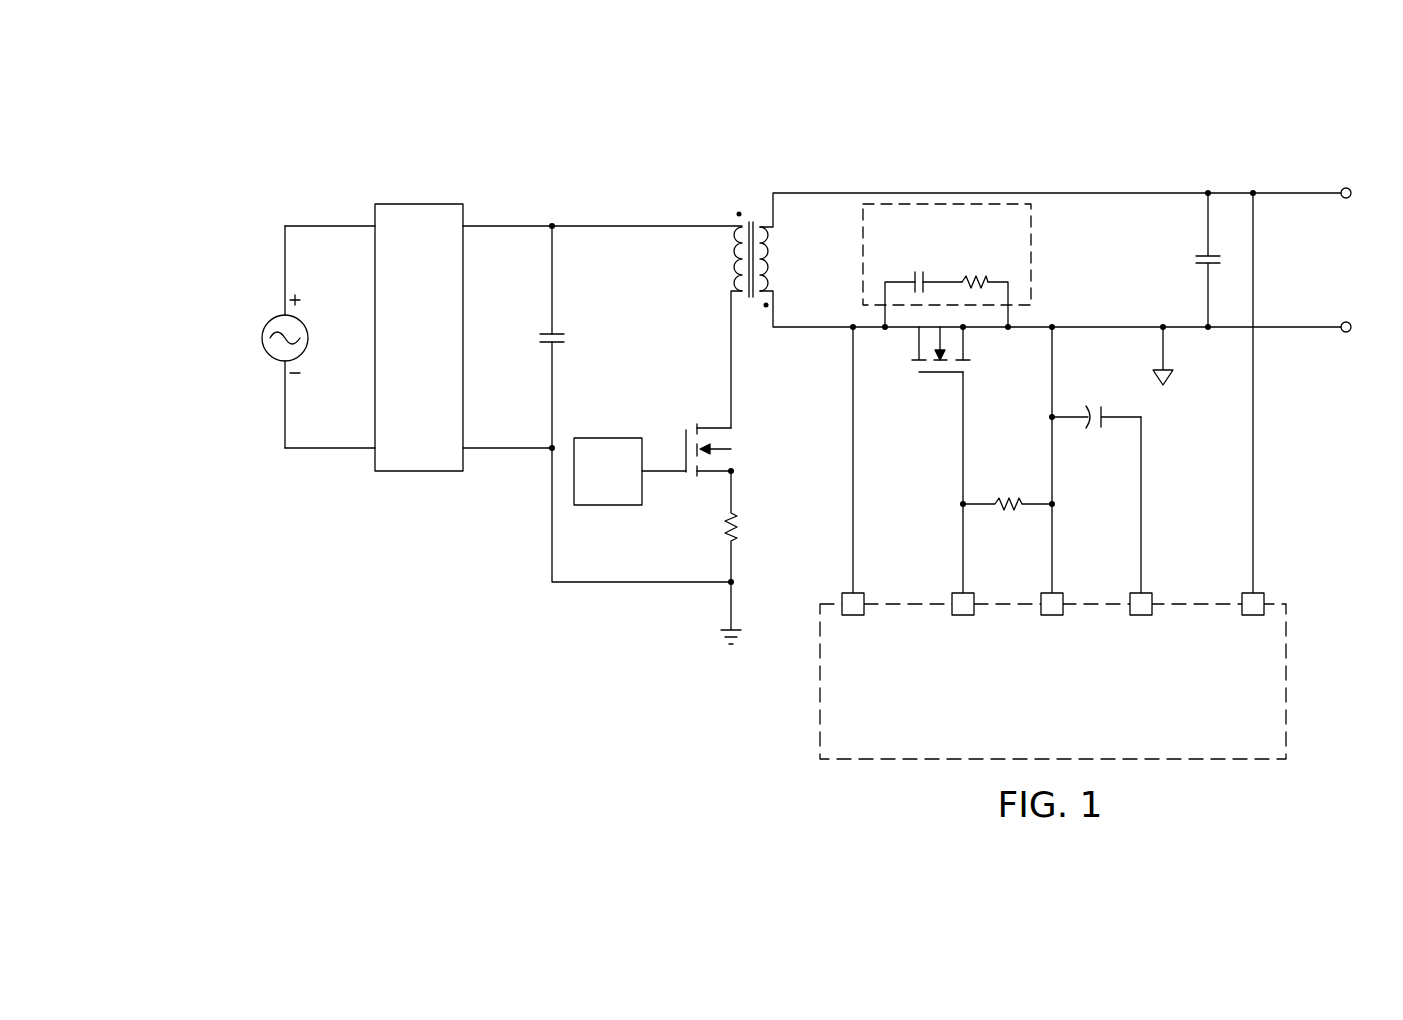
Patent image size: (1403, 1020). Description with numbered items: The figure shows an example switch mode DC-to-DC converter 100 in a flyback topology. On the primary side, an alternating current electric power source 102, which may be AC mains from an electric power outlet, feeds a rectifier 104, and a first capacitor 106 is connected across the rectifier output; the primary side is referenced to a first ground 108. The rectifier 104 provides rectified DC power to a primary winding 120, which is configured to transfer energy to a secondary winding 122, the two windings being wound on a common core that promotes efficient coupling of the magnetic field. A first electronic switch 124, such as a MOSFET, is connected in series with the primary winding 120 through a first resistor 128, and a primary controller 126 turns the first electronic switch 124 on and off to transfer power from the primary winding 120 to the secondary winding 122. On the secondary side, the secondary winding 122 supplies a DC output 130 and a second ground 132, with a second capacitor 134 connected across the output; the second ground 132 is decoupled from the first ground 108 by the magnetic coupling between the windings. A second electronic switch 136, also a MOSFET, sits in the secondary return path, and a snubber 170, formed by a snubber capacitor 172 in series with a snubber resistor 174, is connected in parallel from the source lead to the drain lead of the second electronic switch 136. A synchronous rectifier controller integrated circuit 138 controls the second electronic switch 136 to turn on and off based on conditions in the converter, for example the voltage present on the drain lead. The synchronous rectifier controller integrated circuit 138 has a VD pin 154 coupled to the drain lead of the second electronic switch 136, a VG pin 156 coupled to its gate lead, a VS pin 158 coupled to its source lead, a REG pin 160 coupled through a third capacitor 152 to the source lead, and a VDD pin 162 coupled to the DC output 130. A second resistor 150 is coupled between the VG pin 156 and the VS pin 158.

The switch mode DC-to-DC converter 100 is at (607, 125).
The alternating current electric power source 102 is at (262, 335).
The rectifier 104 is at (420, 204).
The first capacitor 106 is at (563, 337).
The first ground 108 is at (718, 640).
The primary winding 120 is at (748, 296).
The secondary winding 122 is at (764, 227).
The first electronic switch 124 is at (680, 430).
The primary controller 126 is at (610, 438).
The first resistor 128 is at (723, 522).
The DC output 130 is at (1297, 192).
The second ground 132 is at (1297, 329).
The second capacitor 134 is at (1197, 258).
The second electronic switch 136 is at (930, 375).
The synchronous rectifier controller integrated circuit 138 is at (1009, 662).
The second resistor 150 is at (1010, 500).
The third capacitor 152 is at (1092, 405).
The VD pin 154 is at (858, 617).
The VG pin 156 is at (968, 617).
The VS pin 158 is at (1058, 617).
The REG pin 160 is at (1147, 617).
The VDD pin 162 is at (1245, 617).
The snubber 170 is at (987, 263).
The snubber capacitor 172 is at (917, 271).
The snubber resistor 174 is at (1033, 240).